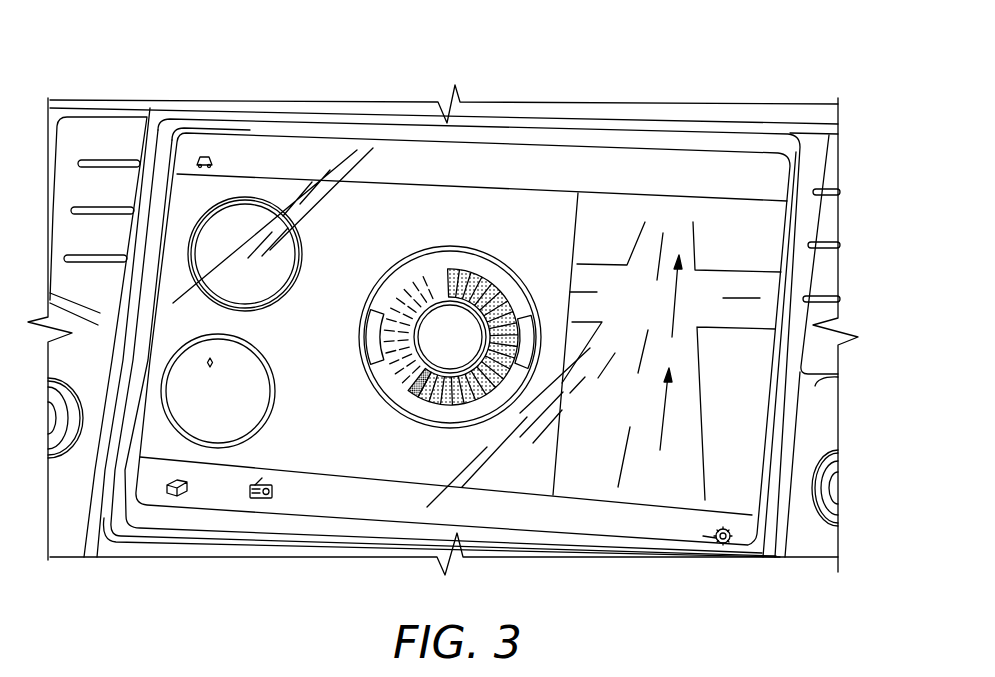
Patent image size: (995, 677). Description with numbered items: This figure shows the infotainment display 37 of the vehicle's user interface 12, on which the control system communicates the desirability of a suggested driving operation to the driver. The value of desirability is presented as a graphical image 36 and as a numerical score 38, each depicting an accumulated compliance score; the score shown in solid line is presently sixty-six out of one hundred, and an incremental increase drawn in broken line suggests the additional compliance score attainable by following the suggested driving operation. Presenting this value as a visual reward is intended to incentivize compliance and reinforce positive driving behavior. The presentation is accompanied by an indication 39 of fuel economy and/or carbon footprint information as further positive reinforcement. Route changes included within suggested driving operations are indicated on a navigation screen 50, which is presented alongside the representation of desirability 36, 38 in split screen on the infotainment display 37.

The navigation screen 50 is at (410, 88).
The user interface 12 is at (205, 120).
The infotainment display 37 is at (699, 146).
The numerical score 38 is at (302, 236).
The indication of fuel economy 39 is at (262, 340).
The graphical image 36 is at (488, 242).